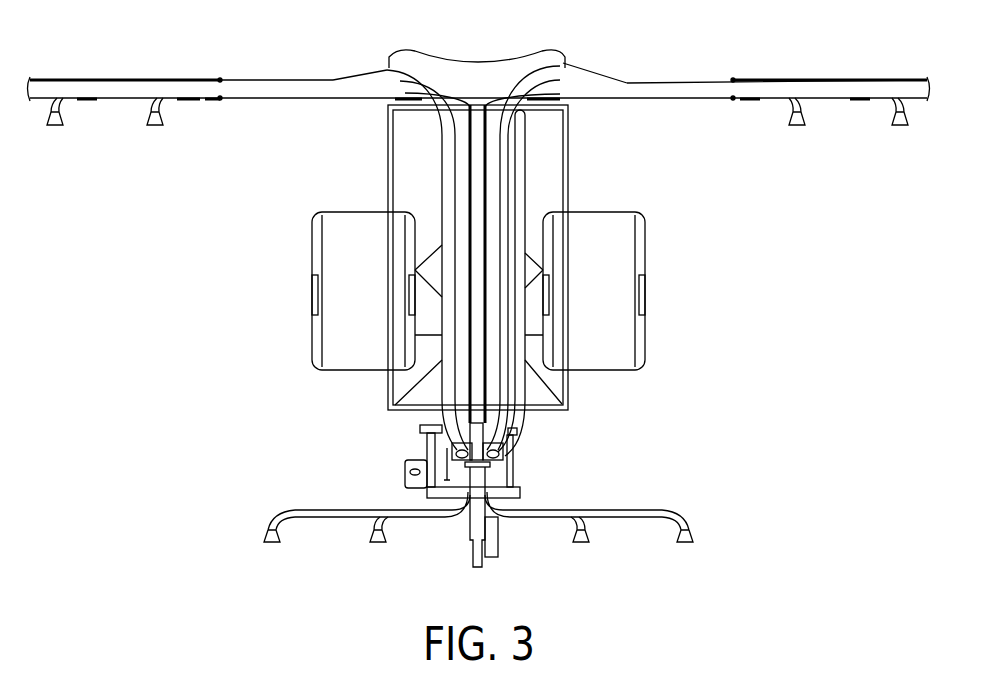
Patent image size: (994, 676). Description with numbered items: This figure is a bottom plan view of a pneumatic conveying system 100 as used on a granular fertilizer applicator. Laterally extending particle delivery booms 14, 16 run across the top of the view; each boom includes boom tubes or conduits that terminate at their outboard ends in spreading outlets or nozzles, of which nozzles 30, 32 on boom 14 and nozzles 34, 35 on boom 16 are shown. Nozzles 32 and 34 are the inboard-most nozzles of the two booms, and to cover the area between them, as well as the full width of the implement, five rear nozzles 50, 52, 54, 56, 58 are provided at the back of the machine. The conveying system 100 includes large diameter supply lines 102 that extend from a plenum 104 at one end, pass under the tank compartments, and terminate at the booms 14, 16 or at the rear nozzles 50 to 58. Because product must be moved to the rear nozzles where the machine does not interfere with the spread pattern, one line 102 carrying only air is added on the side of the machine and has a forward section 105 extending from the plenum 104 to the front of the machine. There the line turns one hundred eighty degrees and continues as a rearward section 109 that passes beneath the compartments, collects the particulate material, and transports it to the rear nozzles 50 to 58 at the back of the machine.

The particle delivery boom 14 is at (670, 71).
The particle delivery boom 16 is at (331, 76).
The nozzle 30 is at (901, 126).
The nozzle 32 is at (798, 126).
The nozzle 34 is at (156, 126).
The nozzle 35 is at (56, 126).
The rear nozzle 50 is at (685, 543).
The rear nozzle 52 is at (581, 543).
The rear nozzle 54 is at (470, 546).
The rear nozzle 56 is at (378, 543).
The rear nozzle 58 is at (272, 543).
The pneumatic conveying system 100 is at (377, 409).
The supply line 102 is at (462, 207).
The plenum 104 is at (497, 477).
The forward section 105 is at (518, 305).
The rearward section 109 is at (480, 408).